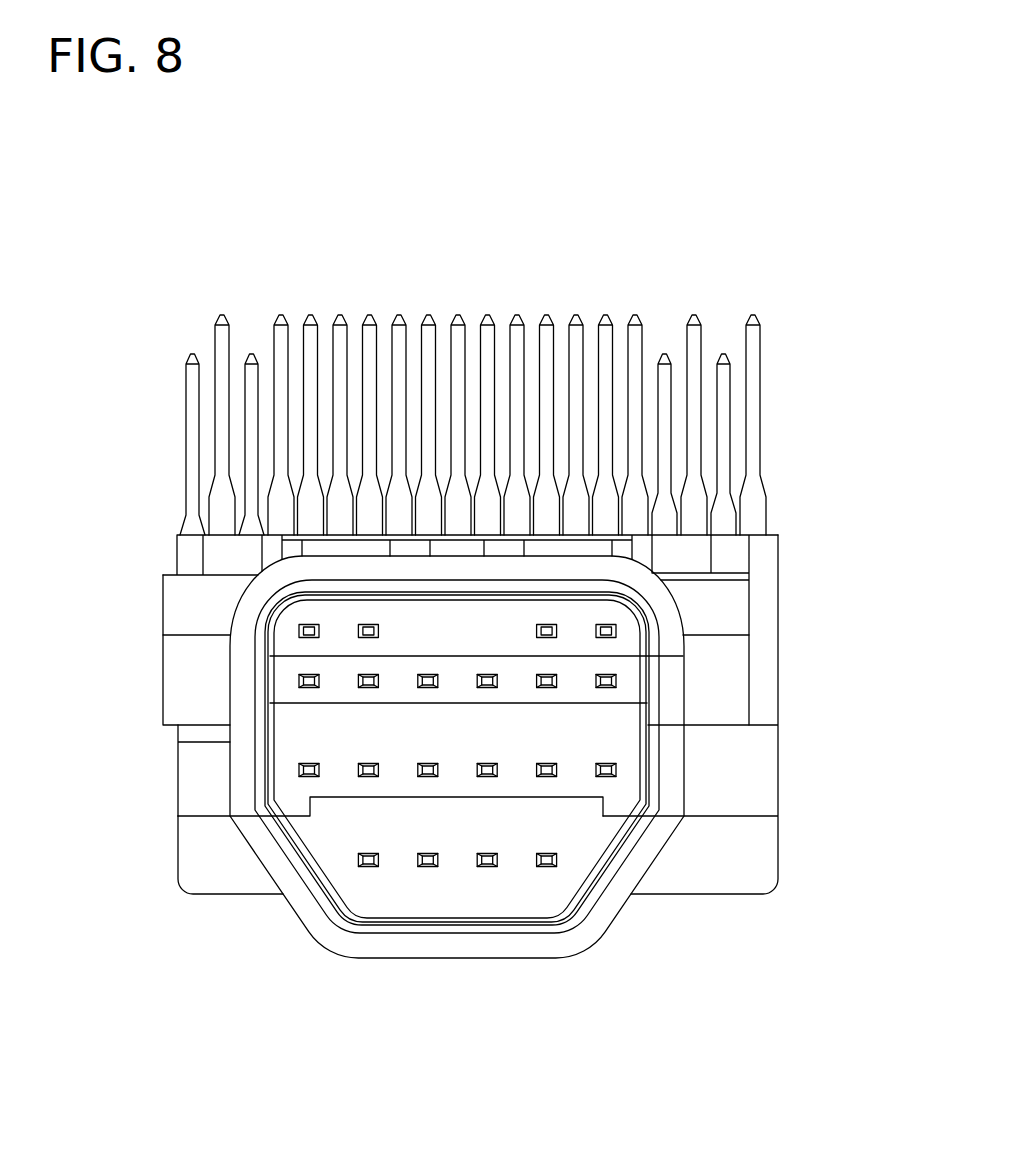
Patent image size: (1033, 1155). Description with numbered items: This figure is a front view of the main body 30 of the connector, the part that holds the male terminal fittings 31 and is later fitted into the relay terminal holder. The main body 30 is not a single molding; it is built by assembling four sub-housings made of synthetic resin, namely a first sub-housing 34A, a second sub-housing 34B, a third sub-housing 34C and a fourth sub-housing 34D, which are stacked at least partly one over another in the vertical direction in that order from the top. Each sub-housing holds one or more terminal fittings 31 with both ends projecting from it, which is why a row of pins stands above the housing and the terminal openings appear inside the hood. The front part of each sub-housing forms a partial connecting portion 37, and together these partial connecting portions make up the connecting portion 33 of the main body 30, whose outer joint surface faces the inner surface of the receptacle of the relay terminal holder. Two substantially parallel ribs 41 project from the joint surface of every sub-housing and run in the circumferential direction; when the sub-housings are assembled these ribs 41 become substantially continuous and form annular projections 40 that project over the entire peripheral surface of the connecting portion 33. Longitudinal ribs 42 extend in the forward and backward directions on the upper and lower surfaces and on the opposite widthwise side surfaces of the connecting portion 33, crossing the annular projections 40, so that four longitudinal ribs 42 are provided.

The main body 30 is at (217, 280).
The male terminal fittings 31 is at (700, 332).
The connecting portion 33 is at (560, 757).
The partial connecting portion 37 is at (676, 748).
The first sub-housing 34A is at (185, 610).
The second sub-housing 34B is at (183, 650).
The third sub-housing 34C is at (200, 785).
The fourth sub-housing 34D is at (200, 865).
The annular projections 40 is at (535, 769).
The ribs 41 is at (618, 852).
The longitudinal ribs 42 is at (456, 597).